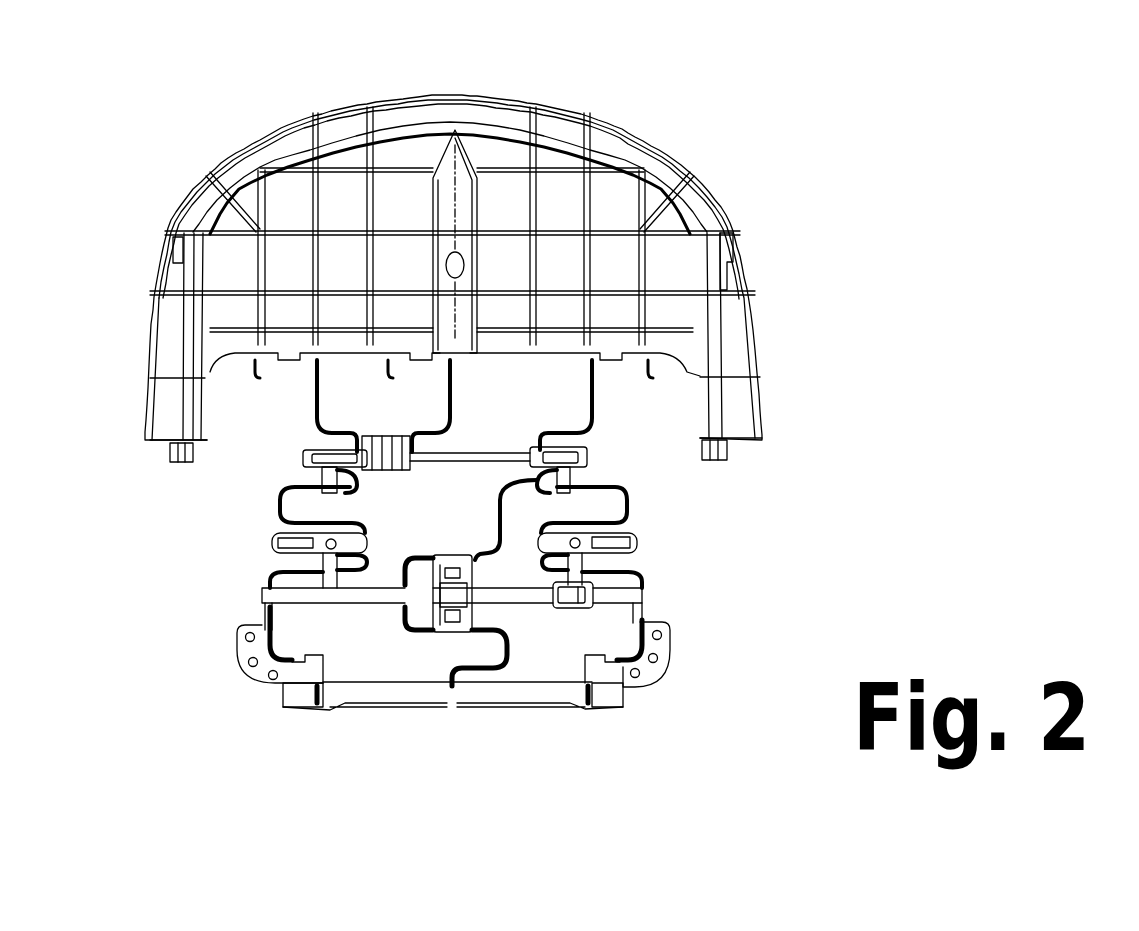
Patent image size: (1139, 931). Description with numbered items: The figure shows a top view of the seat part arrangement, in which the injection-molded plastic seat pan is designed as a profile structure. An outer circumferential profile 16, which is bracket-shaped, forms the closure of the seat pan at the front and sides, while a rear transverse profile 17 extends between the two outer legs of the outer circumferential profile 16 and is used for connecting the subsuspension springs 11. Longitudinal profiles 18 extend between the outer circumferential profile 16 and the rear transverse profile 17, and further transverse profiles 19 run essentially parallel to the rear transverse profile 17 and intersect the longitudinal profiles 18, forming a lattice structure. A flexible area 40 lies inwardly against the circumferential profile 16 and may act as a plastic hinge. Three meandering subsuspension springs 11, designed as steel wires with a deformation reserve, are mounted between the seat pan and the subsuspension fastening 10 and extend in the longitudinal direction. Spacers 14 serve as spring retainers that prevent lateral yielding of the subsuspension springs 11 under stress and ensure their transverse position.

The subsuspension fastening 10 is at (507, 698).
The subsuspension springs 11 is at (458, 393).
The spacers (spring retainers) 14 is at (592, 457).
The outer circumferential profile 16 is at (402, 150).
The rear transverse profile 17 is at (667, 345).
The longitudinal profiles 18 is at (385, 150).
The further transverse profiles 19 is at (283, 230).
The flexible area 40 is at (348, 207).